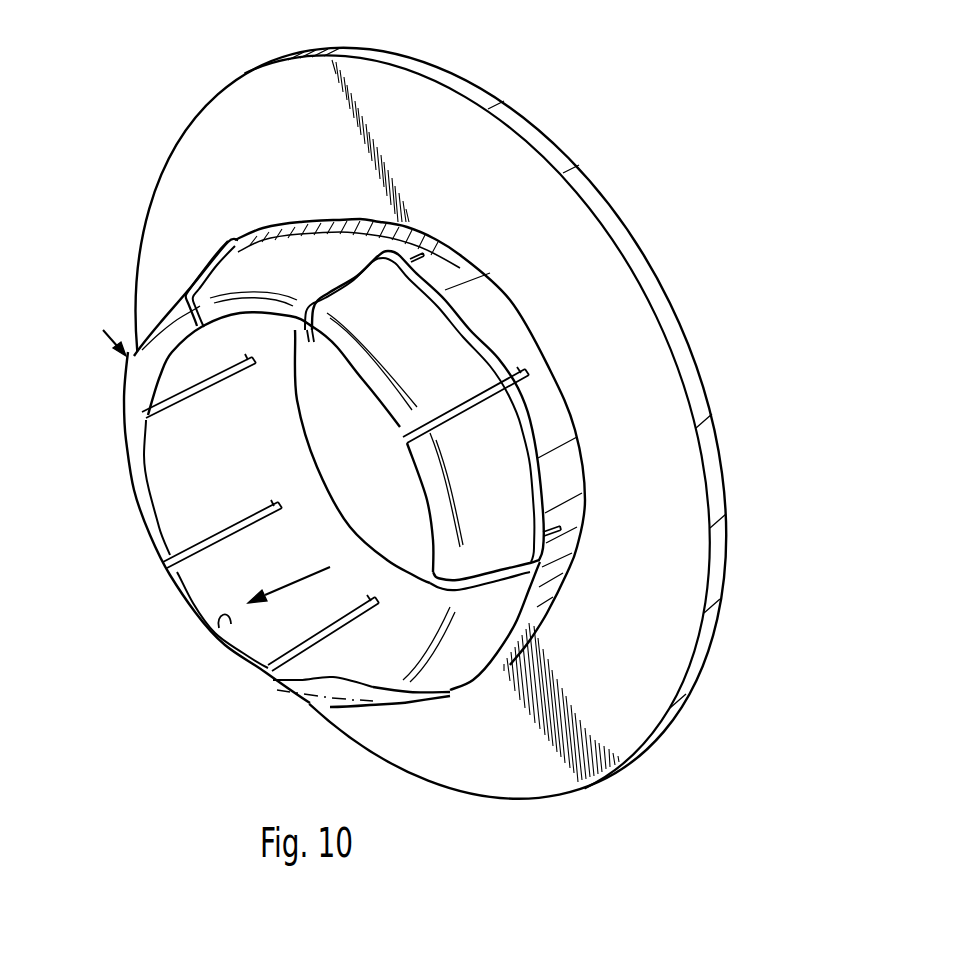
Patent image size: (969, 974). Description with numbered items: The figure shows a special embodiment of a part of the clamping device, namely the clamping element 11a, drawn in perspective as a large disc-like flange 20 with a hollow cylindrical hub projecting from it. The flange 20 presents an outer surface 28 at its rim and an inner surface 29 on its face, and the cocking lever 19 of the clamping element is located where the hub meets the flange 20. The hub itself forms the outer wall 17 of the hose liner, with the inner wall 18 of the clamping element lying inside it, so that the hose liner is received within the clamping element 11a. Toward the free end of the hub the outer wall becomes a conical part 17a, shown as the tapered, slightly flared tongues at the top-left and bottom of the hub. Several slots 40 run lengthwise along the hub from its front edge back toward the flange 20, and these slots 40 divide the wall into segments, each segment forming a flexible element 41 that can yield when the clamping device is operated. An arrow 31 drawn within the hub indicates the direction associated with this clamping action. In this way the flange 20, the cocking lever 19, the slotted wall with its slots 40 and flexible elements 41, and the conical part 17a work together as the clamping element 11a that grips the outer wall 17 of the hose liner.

The clamping element 11a is at (98, 325).
The outer wall of the hose liner 17 is at (542, 380).
The conical part of the outer wall 17a is at (167, 313).
The inner wall 18 is at (224, 626).
The cocking lever 19 is at (465, 318).
The flange 20 is at (518, 122).
The outer surface of the flange 28 is at (586, 165).
The inner surface of the flange 29 is at (162, 186).
The arrow 31 is at (298, 578).
The slots 40 is at (313, 337).
The flexible element 41 is at (366, 372).